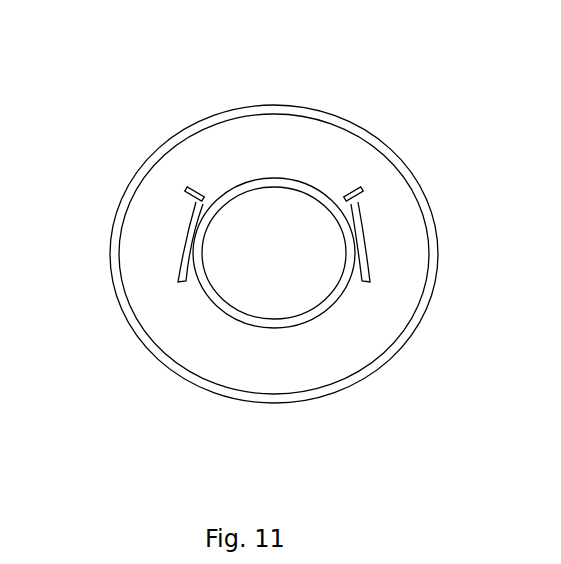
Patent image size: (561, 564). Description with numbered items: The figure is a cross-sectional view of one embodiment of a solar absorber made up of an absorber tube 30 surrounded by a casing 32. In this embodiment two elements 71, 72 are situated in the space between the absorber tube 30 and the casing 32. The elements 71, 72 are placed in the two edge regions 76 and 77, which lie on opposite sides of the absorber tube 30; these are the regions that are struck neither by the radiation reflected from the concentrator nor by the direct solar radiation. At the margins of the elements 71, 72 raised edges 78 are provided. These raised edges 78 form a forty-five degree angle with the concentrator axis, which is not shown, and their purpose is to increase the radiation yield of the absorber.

The absorber tube 30 is at (318, 320).
The casing 32 is at (315, 254).
The element 71 is at (184, 236).
The element 72 is at (366, 225).
The edge region 76 is at (271, 254).
The edge region 77 is at (437, 252).
The raised edges 78 is at (265, 236).